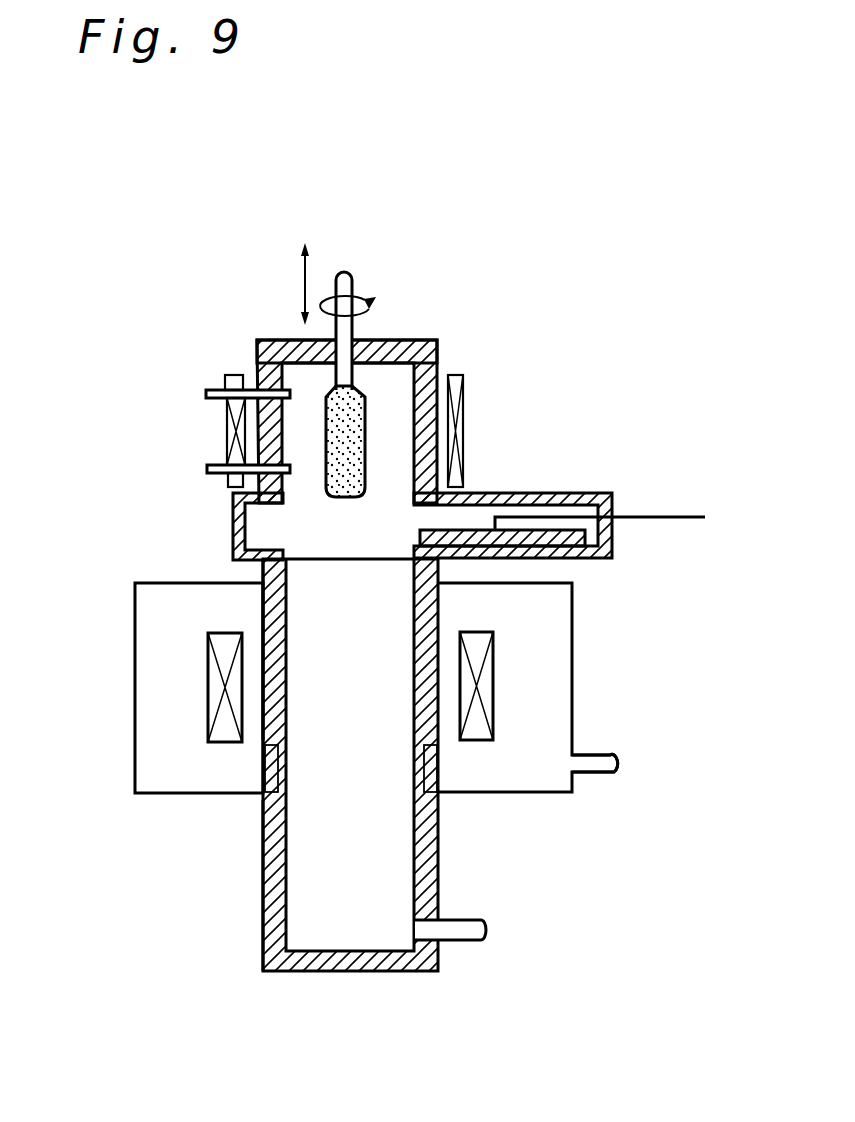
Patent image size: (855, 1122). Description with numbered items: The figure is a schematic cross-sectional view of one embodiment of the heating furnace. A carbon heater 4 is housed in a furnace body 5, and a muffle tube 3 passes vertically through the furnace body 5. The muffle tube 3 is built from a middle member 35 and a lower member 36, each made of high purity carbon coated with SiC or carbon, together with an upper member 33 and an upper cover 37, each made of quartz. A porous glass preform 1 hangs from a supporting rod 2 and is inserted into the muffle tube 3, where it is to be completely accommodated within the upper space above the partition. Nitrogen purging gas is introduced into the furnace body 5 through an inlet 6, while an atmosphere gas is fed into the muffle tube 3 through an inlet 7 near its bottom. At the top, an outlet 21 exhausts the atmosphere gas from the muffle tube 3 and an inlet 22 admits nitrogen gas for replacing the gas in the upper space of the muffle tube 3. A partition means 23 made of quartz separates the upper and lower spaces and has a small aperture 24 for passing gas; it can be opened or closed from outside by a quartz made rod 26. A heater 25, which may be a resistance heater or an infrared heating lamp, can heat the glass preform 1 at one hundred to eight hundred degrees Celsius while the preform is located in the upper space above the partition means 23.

The porous glass preform 1 is at (362, 395).
The supporting rod 2 is at (350, 280).
The muffle tube 3 is at (444, 853).
The carbon heater 4 is at (215, 688).
The furnace body 5 is at (572, 607).
The inlet 6 is at (595, 768).
The inlet 7 is at (469, 942).
The outlet 21 is at (222, 390).
The inlet 22 is at (218, 465).
The partition means 23 is at (542, 530).
The aperture 24 is at (453, 535).
The heater 25 is at (465, 385).
The quartz made rod 26 is at (670, 515).
The upper member 33 is at (438, 378).
The middle member 35 is at (262, 612).
The lower member 36 is at (266, 887).
The upper cover 37 is at (283, 344).